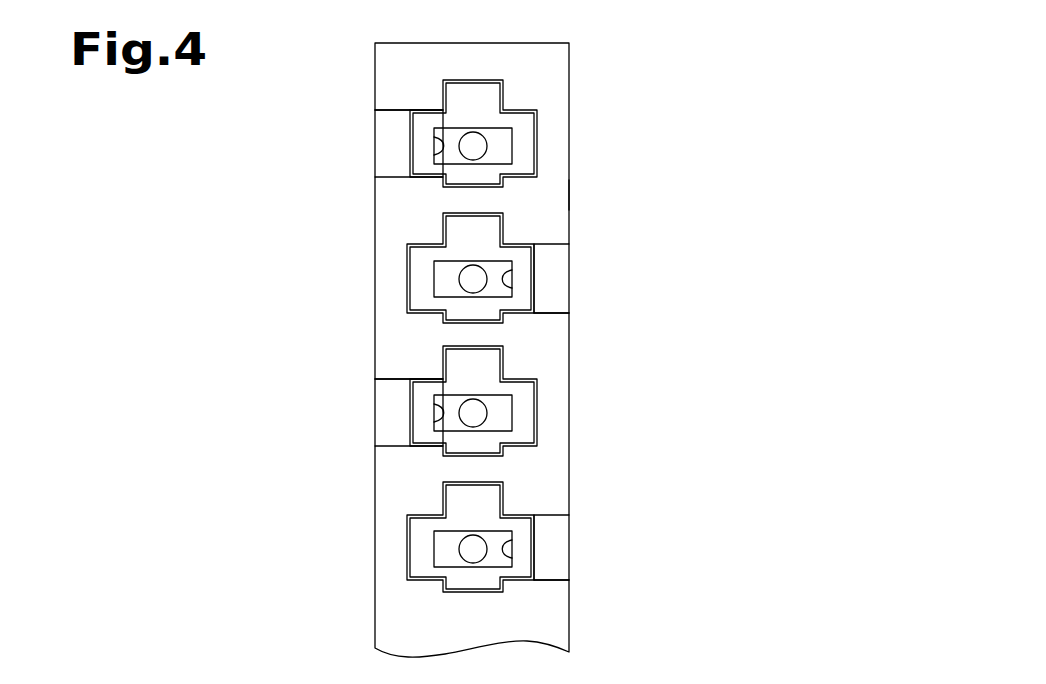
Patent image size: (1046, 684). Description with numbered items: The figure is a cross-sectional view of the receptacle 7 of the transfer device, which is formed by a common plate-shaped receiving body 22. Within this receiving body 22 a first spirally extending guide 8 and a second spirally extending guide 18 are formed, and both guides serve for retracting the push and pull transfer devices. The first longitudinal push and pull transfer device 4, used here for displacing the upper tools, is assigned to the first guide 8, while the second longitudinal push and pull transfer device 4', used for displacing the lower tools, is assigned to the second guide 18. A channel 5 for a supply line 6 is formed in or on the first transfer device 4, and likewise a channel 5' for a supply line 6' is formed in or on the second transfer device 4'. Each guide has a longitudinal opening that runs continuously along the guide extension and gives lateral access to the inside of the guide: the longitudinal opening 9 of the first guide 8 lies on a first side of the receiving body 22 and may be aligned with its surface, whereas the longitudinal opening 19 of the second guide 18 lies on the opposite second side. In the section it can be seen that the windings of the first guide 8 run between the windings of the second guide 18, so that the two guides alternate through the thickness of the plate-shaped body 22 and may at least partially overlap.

The receptacle 7 is at (702, 136).
The plate-shaped receiving body 22 is at (570, 193).
The first spirally extending guide 8 is at (394, 112).
The longitudinal opening of the first guide 9 is at (352, 136).
The first longitudinal push and pull transfer device 4 is at (365, 277).
The channel 5 is at (384, 320).
The supply line 6 is at (558, 258).
The second longitudinal push and pull transfer device 4' is at (545, 402).
The channel 5' is at (549, 421).
The supply line 6' is at (384, 435).
The longitudinal opening of the second guide 19 is at (582, 268).
The second spirally extending guide 18 is at (552, 313).